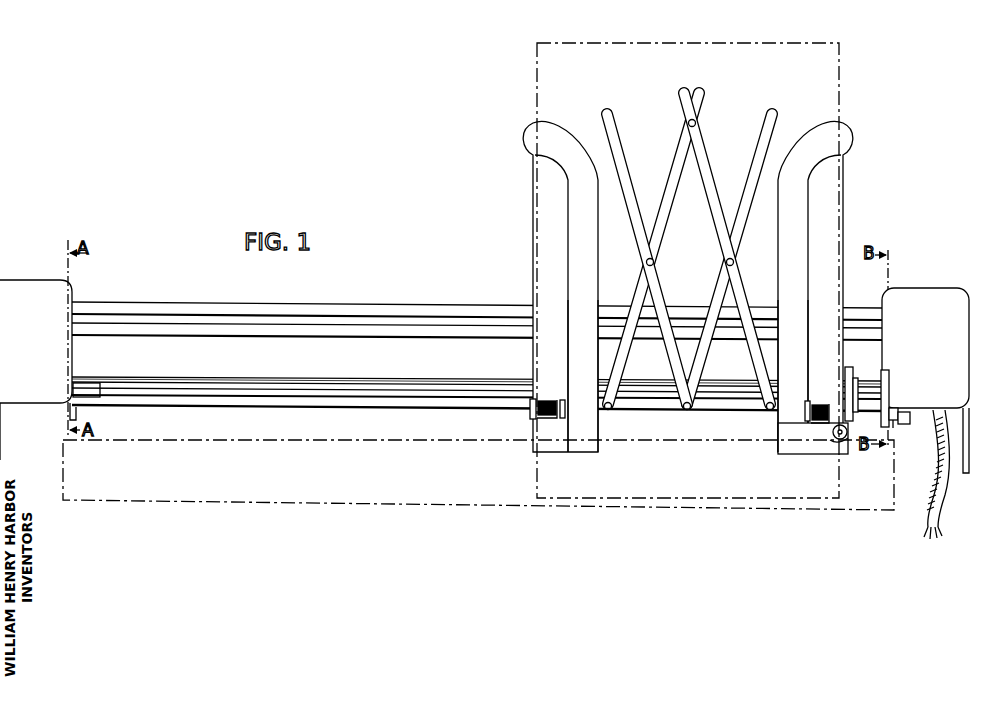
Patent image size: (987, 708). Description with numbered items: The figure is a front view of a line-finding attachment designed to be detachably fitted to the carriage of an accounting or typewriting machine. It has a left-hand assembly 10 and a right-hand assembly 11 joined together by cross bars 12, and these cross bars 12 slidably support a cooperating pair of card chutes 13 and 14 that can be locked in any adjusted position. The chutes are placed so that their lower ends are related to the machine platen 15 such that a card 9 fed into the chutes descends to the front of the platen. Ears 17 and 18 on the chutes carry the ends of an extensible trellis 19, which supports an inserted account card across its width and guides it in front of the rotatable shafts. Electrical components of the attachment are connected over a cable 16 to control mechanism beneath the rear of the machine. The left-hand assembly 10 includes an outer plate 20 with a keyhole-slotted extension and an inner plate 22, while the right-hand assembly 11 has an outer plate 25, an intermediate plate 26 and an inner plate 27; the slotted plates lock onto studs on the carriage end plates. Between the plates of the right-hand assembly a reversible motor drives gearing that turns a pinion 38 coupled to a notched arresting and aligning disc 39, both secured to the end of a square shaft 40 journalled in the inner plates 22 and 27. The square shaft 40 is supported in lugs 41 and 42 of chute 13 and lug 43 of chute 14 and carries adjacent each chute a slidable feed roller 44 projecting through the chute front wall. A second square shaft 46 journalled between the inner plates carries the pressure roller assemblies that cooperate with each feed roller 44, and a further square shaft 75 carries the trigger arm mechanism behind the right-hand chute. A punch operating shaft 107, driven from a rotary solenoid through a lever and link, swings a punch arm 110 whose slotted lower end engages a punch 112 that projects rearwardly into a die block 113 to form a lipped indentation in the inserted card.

The card 9 is at (537, 63).
The left-hand assembly 10 is at (40, 276).
The right-hand assembly 11 is at (940, 284).
The cross bars 12 is at (172, 311).
The card chute 13 is at (541, 141).
The card chute 14 is at (835, 147).
The machine platen 15 is at (470, 511).
The cable 16 is at (930, 494).
The ear 17 is at (604, 425).
The ear 18 is at (768, 425).
The extensible trellis 19 is at (661, 232).
The outer plate 20 is at (2, 441).
The inner plate 22 is at (78, 416).
The outer plate 25 is at (965, 475).
The intermediate plate 26 is at (910, 420).
The inner plate 27 is at (889, 396).
The pinion 38 is at (896, 427).
The notched arresting and aligning disc 39 is at (894, 409).
The square shaft 40 is at (428, 412).
The lug 41 is at (535, 399).
The lug 42 is at (566, 402).
The lug 43 is at (806, 410).
The feed roller 44 is at (548, 418).
The square shaft 46 is at (234, 385).
The square shaft 75 is at (288, 395).
The punch operating shaft 107 is at (375, 381).
The punch arm 110 is at (845, 378).
The punch 112 is at (837, 439).
The die block 113 is at (813, 438).